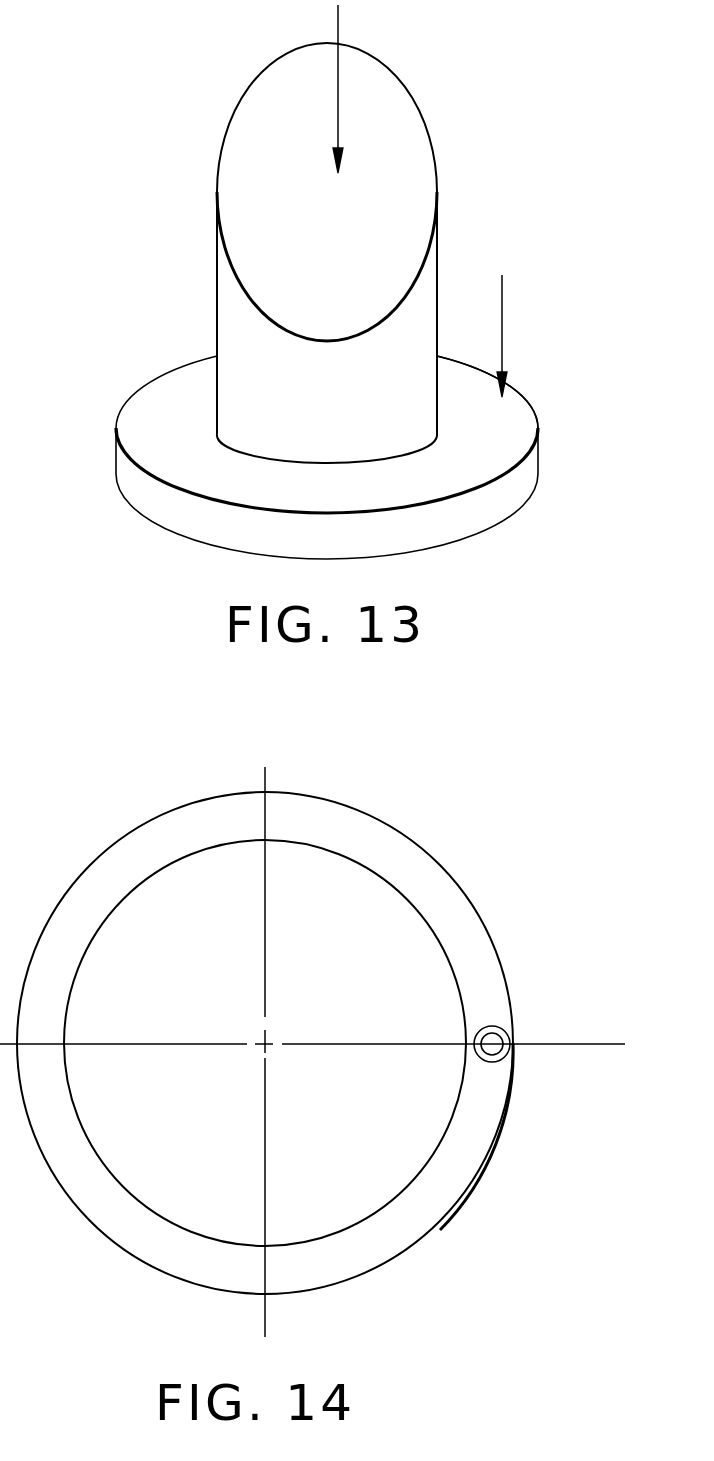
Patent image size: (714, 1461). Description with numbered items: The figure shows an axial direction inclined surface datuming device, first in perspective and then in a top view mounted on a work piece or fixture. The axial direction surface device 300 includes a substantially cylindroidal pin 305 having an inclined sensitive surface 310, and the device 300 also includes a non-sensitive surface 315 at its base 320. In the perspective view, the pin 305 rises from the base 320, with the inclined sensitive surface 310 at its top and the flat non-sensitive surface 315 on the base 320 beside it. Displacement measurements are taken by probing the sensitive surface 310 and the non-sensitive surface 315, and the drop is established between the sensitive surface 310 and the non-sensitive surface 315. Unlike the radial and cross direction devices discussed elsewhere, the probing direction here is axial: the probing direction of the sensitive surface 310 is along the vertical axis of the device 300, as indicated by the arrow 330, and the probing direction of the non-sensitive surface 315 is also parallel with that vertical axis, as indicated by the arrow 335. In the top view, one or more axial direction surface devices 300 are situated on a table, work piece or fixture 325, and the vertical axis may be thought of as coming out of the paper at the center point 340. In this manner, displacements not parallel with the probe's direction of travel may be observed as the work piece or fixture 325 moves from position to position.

In FIG. 13, the axial direction surface device 300 is at (314, 387).
In FIG. 14, the axial direction surface device 300 is at (500, 1058).
In FIG. 13, the cylindroidal pin 305 is at (232, 301).
In FIG. 13, the inclined sensitive surface 310 is at (306, 169).
In FIG. 13, the non-sensitive surface 315 is at (510, 451).
In FIG. 13, the base 320 is at (512, 497).
In FIG. 14, the work piece or fixture 325 is at (452, 1186).
In FIG. 13, the arrow 330 is at (339, 21).
In FIG. 13, the arrow 335 is at (503, 318).
In FIG. 14, the center point 340 is at (267, 1046).